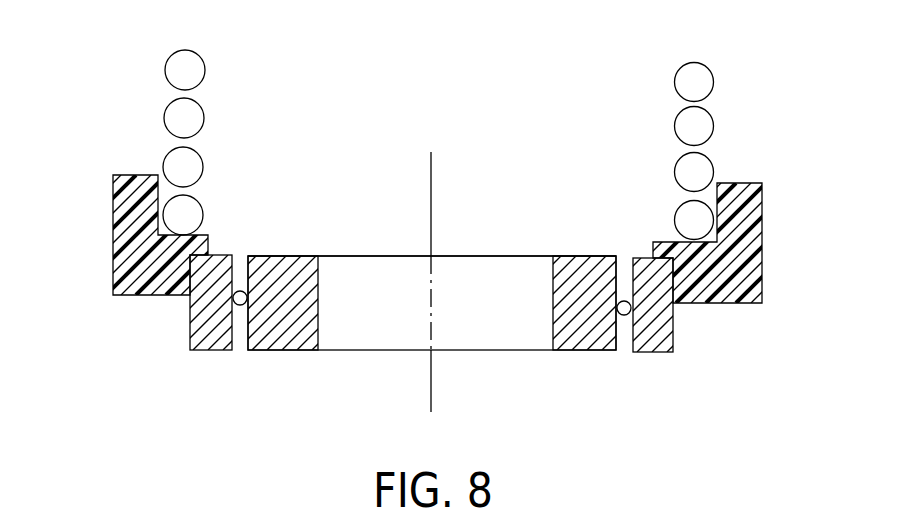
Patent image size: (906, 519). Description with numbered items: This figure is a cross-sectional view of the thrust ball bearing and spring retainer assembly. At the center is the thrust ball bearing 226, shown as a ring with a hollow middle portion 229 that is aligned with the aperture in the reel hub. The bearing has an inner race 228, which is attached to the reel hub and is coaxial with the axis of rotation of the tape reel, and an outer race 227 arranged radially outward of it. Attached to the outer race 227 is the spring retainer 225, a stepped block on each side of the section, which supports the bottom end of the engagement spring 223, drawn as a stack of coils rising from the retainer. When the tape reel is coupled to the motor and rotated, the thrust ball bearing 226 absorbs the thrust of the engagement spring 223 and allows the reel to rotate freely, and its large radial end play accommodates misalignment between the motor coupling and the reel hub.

The engagement spring 223 is at (165, 70).
The spring retainer 225 is at (128, 254).
The thrust ball bearing 226 is at (432, 200).
The outer race 227 is at (202, 333).
The inner race 228 is at (283, 330).
The hollow middle portion 229 is at (377, 275).